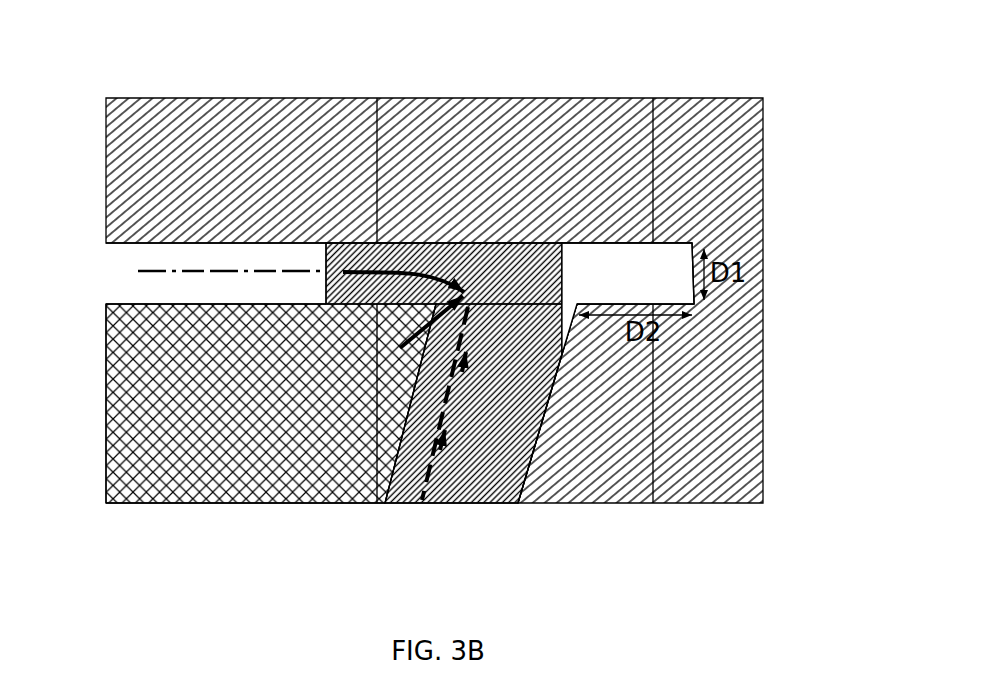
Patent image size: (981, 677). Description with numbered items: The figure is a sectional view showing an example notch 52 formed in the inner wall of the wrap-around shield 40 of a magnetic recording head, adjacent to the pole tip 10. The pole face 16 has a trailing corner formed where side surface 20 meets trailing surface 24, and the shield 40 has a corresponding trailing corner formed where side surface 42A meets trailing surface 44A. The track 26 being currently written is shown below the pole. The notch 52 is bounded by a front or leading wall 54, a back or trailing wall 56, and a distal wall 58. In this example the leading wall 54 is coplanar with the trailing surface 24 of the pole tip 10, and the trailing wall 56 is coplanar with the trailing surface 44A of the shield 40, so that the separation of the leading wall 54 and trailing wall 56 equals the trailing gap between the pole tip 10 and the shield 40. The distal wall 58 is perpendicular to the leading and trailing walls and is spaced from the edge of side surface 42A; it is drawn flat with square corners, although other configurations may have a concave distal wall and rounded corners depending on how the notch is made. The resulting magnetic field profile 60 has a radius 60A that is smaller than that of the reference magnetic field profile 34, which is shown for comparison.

The pole tip 10 is at (148, 493).
The pole face 16 is at (260, 452).
The side surface 20 is at (422, 502).
The trailing surface 24 is at (127, 303).
The track 26 is at (482, 503).
The magnetic field profile 34 is at (422, 270).
The wrap-around shield 40 is at (205, 122).
The side surface 42A is at (523, 503).
The trailing surface 44A is at (158, 265).
The notch 52 is at (690, 225).
The leading wall 54 is at (601, 305).
The trailing wall 56 is at (632, 265).
The distal wall 58 is at (655, 267).
The magnetic field profile 60 is at (455, 268).
The radius 60A is at (554, 452).